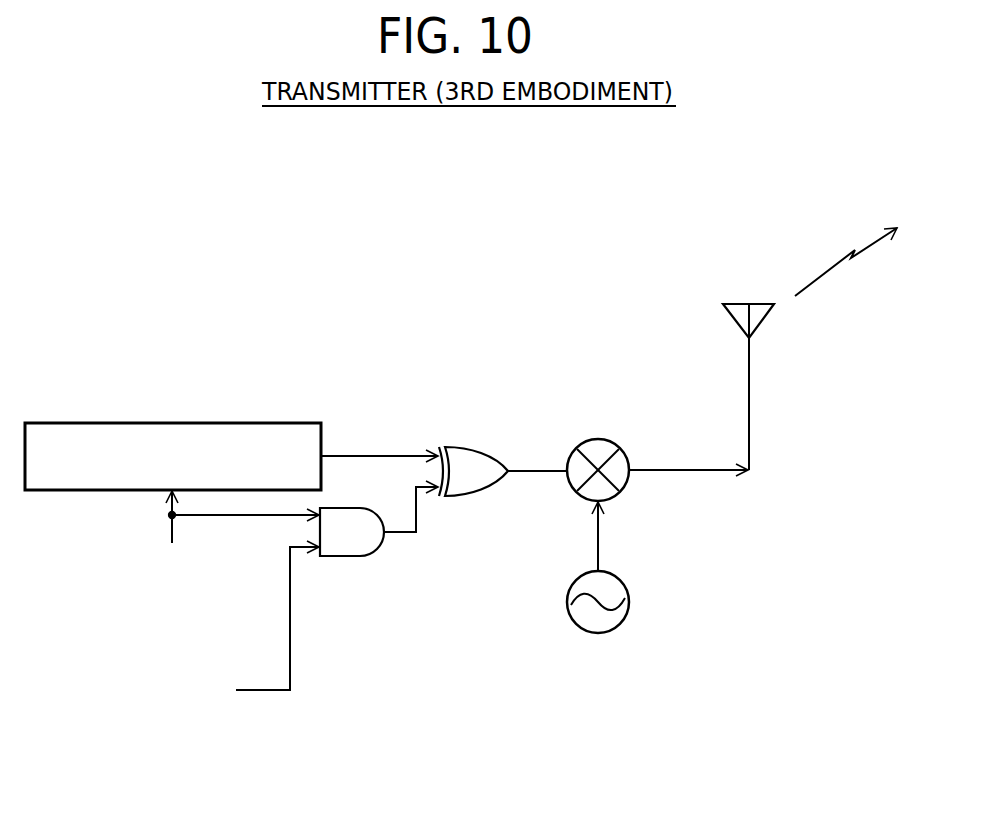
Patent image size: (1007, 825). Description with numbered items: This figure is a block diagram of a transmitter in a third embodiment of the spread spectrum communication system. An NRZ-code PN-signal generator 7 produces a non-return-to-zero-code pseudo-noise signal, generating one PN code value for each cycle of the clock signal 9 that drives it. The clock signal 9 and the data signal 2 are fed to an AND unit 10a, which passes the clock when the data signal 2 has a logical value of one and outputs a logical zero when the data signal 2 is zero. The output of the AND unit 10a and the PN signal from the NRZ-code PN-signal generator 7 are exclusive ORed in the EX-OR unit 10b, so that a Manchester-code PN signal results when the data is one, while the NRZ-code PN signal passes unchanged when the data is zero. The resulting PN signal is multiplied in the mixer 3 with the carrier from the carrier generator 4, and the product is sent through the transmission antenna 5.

The NRZ-code PN-signal generator 7 is at (268, 422).
The clock signal 9 is at (223, 534).
The data signal 2 is at (186, 624).
The AND unit 10a is at (363, 558).
The EX-OR unit 10b is at (470, 445).
The mixer 3 is at (612, 440).
The carrier generator 4 is at (612, 633).
The transmission antenna 5 is at (762, 392).